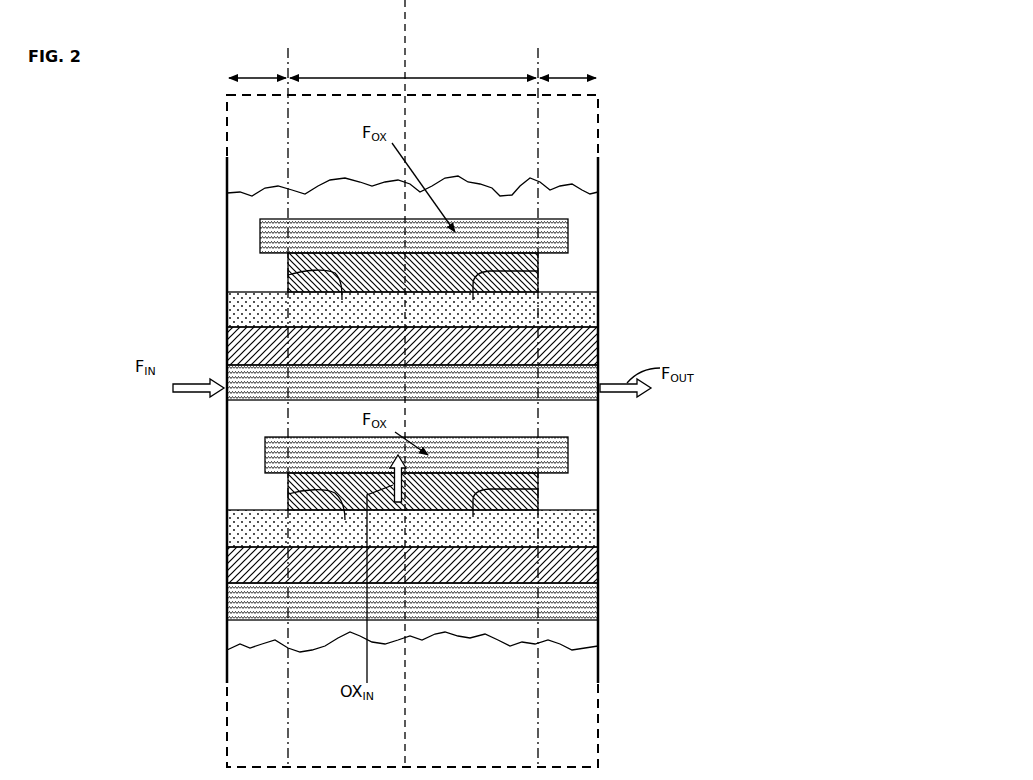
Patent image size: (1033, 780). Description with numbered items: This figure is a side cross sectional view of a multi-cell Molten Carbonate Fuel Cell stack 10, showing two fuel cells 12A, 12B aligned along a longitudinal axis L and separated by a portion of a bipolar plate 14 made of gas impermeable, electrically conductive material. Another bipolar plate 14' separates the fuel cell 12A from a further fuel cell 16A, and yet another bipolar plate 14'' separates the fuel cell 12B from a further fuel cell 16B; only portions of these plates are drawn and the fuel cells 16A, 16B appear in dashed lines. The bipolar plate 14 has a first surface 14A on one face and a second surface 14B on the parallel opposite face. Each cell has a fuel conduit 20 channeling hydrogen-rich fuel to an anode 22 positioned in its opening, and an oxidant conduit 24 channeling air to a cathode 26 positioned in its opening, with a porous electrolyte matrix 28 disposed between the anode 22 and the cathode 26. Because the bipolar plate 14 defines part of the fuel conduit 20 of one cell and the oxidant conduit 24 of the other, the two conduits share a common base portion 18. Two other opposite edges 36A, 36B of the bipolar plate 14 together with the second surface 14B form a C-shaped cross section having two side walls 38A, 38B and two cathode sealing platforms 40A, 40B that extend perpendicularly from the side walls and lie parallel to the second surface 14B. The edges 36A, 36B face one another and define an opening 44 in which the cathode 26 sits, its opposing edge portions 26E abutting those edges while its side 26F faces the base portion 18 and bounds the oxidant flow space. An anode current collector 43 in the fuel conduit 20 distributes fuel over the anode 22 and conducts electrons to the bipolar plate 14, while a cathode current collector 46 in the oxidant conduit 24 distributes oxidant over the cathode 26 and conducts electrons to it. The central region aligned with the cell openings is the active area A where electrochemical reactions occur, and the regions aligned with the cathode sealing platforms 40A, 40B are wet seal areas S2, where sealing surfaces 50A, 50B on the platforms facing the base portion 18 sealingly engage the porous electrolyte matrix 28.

The multi-cell Molten Carbonate Fuel Cell stack 10 is at (87, 215).
The fuel cell 12A is at (662, 298).
The fuel cell 12B is at (662, 547).
The bipolar plate 14 is at (712, 416).
The bipolar plate 14' is at (635, 188).
The bipolar plate 14'' is at (693, 655).
The first surface 14A is at (310, 402).
The second surface 14B is at (560, 478).
The fuel cell 16A is at (205, 145).
The fuel cell 16B is at (192, 701).
The base portion 18 is at (387, 197).
The fuel conduit 20 is at (600, 367).
The anode 22 is at (600, 343).
The oxidant conduit 24 is at (586, 227).
The cathode 26 is at (538, 270).
The opposing edge portions of the cathode 26E is at (288, 266).
The side of the cathode 26F is at (373, 292).
The porous electrolyte matrix 28 is at (565, 297).
The other opposite edge 36A is at (496, 404).
The other opposite edge 36B is at (325, 404).
The side wall 38A is at (640, 223).
The side wall 38B is at (232, 226).
The cathode sealing platform 40A is at (567, 262).
The cathode sealing platform 40B is at (258, 277).
The anode current collector 43 is at (437, 384).
The opening 44 is at (483, 250).
The cathode current collector 46 is at (486, 242).
The sealing surface 50A is at (575, 307).
The sealing surface 50B is at (236, 294).
The wet seal area S2 is at (255, 72).
The active area A is at (377, 76).
The longitudinal axis L is at (405, 38).